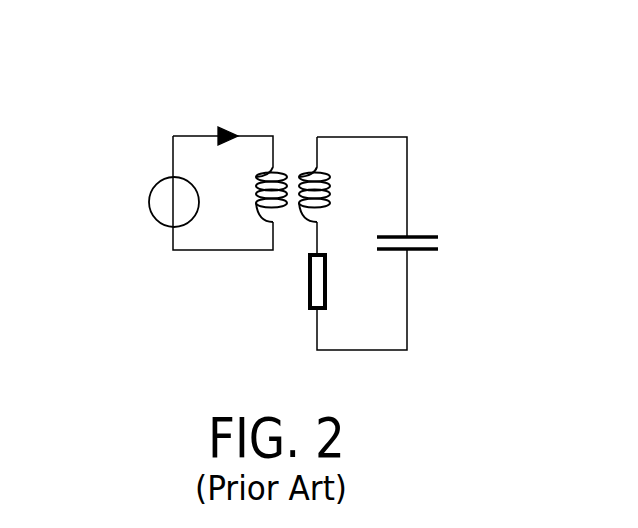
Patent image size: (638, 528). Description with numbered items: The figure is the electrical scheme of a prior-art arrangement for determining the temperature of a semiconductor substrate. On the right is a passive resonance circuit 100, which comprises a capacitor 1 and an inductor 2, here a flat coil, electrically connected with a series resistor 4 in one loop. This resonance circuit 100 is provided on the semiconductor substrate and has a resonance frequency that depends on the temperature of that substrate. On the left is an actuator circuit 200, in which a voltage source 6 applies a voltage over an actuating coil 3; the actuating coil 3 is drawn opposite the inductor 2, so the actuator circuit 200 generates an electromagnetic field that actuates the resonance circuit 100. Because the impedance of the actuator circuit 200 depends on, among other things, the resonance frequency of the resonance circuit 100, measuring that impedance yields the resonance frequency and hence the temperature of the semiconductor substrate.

The actuator circuit 200 is at (186, 95).
The passive resonance circuit 100 is at (389, 95).
The voltage source 6 is at (150, 203).
The actuating coil 3 is at (256, 205).
The inductor 2 is at (334, 190).
The series resistor 4 is at (308, 293).
The capacitor 1 is at (433, 253).